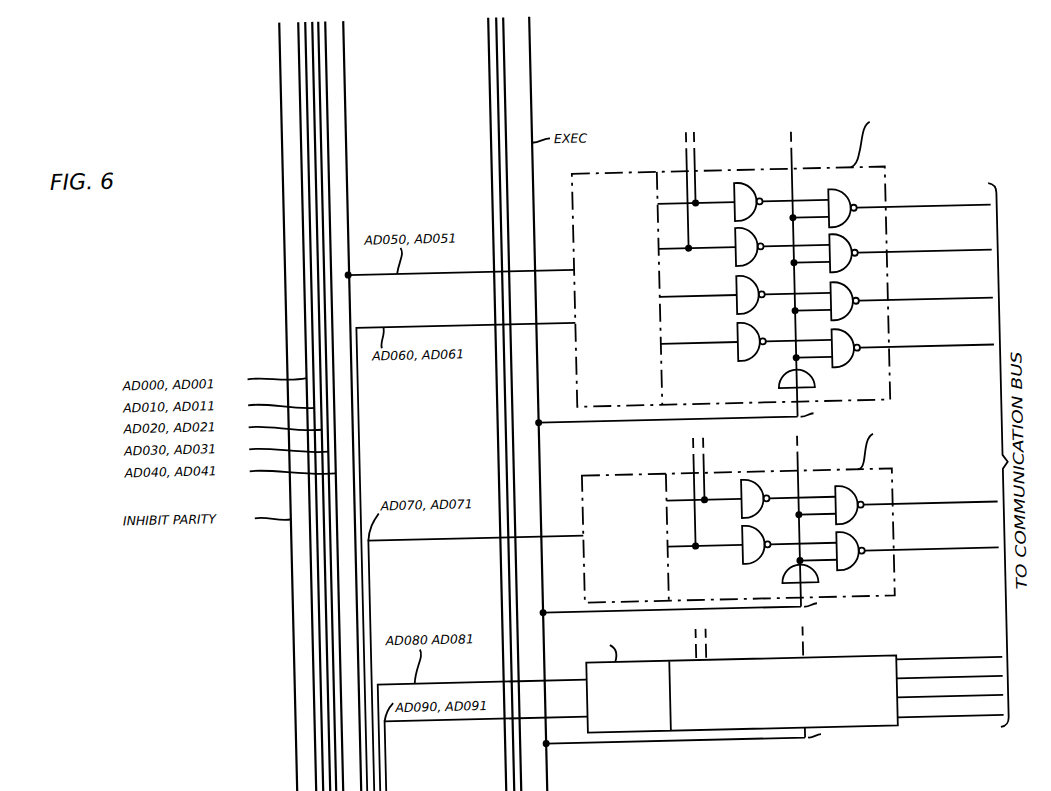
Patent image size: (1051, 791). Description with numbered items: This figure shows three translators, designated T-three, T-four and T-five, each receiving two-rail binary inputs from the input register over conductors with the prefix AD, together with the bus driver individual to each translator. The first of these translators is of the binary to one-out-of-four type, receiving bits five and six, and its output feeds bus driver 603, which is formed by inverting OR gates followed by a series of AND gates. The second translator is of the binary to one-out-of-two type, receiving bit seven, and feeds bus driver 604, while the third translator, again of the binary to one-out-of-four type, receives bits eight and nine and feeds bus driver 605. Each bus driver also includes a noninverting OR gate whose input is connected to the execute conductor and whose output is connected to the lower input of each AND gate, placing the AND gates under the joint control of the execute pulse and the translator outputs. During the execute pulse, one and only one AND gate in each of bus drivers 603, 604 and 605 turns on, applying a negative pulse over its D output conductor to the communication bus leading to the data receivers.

The bus driver 603 is at (890, 181).
The bus driver 604 is at (891, 487).
The bus driver 605 is at (866, 664).